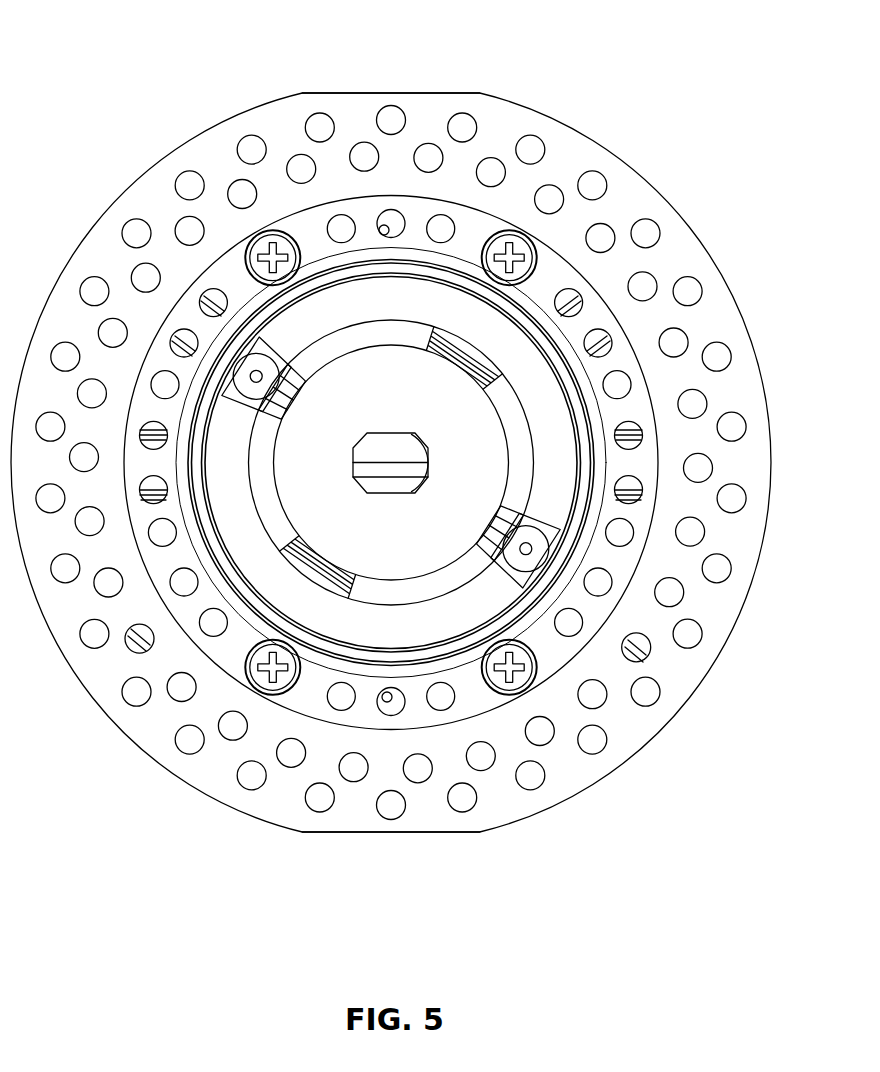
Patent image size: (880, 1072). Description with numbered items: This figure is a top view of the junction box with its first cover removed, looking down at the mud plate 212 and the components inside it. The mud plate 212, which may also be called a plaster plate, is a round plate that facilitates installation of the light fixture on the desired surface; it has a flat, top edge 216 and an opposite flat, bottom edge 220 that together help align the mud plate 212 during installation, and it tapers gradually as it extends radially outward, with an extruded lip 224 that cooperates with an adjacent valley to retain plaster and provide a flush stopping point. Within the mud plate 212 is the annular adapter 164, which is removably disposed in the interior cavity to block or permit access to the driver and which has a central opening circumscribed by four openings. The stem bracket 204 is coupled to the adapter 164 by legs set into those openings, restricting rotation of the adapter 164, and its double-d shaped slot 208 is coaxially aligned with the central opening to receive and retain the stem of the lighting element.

The adapter 164 is at (463, 606).
The stem bracket 204 is at (452, 406).
The slot 208 is at (415, 452).
The mud plate 212 is at (391, 467).
The flat, top edge 216 is at (357, 92).
The flat, bottom edge 220 is at (341, 833).
The extruded lip 224 is at (614, 445).